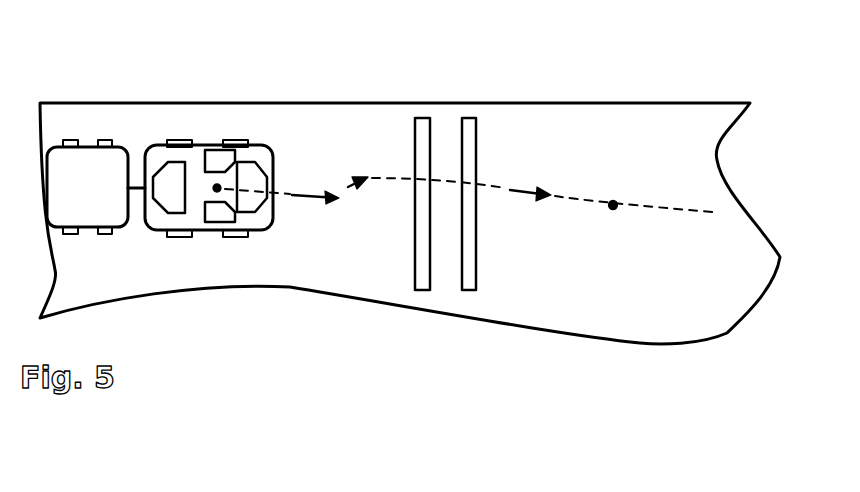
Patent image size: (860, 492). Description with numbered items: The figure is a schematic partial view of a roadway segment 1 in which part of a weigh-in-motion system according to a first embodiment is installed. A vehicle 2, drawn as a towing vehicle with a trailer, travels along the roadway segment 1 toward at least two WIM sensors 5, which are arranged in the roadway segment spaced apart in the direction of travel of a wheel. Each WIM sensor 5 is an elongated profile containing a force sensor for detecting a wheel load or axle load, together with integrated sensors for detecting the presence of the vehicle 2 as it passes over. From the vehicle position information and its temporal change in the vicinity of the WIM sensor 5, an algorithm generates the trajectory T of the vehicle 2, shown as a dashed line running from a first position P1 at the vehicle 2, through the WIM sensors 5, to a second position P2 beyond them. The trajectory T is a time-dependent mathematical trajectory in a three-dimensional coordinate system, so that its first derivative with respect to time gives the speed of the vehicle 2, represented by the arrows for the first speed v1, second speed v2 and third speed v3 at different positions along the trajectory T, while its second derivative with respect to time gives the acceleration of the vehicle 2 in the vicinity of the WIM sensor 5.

The roadway segment 1 is at (195, 145).
The vehicle 2 is at (283, 125).
The WIM sensor 5 is at (423, 145).
The first position P1 is at (217, 193).
The first speed v1 is at (308, 203).
The second speed v2 is at (352, 190).
The third speed v3 is at (503, 205).
The second position P2 is at (614, 210).
The trajectory T is at (713, 212).